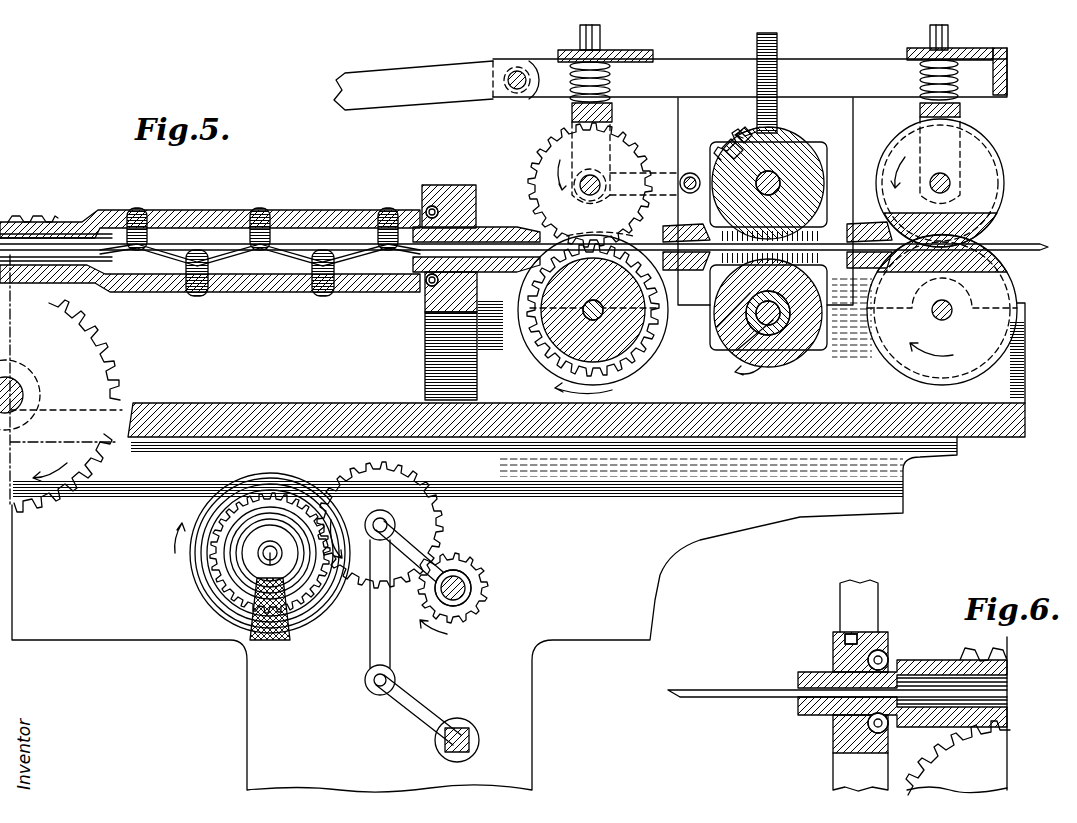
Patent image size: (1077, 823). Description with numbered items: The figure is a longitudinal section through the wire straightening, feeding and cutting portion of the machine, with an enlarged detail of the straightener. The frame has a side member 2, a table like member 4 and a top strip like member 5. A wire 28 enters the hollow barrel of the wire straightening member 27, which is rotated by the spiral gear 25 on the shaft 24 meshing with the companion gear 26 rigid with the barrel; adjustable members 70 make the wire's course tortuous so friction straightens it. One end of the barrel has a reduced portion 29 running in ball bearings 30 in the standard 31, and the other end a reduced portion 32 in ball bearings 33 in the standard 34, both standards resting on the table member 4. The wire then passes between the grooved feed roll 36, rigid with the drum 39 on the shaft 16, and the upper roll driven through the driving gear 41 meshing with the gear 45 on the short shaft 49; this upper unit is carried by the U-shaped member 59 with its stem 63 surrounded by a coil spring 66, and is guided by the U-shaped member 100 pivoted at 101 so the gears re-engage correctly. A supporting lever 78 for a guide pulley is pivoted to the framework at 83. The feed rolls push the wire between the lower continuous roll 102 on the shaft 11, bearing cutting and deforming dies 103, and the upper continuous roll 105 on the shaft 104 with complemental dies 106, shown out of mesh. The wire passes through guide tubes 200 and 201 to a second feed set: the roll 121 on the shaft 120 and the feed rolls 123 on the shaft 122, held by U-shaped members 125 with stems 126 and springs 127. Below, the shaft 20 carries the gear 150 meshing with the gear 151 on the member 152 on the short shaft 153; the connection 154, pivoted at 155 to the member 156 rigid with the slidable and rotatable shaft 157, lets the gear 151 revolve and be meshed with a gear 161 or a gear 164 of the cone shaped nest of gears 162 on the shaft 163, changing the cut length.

In FIG. 5, the side member 2 is at (665, 584).
In FIG. 5, the table like member 4 is at (292, 403).
In FIG. 5, the top strip like member 5 is at (572, 52).
In FIG. 5, the shaft 11 is at (772, 320).
In FIG. 5, the shaft 16 is at (585, 312).
In FIG. 5, the shaft 20 is at (471, 590).
In FIG. 5, the shaft 24 is at (18, 387).
In FIG. 5, the spiral gear 25 is at (87, 368).
In FIG. 6, the spiral gear 25 is at (988, 763).
In FIG. 5, the companion gear 26 is at (33, 221).
In FIG. 6, the companion gear 26 is at (977, 659).
In FIG. 5, the wire straightening member 27 is at (63, 222).
In FIG. 6, the wire straightening member 27 is at (920, 718).
In FIG. 5, the wire 28 is at (80, 232).
In FIG. 6, the wire 28 is at (715, 692).
In FIG. 5, the reduced portion 29 is at (490, 226).
In FIG. 5, the ball bearings 30 is at (442, 192).
In FIG. 5, the standard 31 is at (425, 300).
In FIG. 6, the reduced portion 32 is at (817, 670).
In FIG. 6, the ball bearings 33 is at (888, 657).
In FIG. 6, the standard 34 is at (845, 757).
In FIG. 5, the grooved feed roll 36 is at (522, 330).
In FIG. 5, the drum 39 is at (556, 297).
In FIG. 5, the driving gear 41 is at (563, 246).
In FIG. 5, the gear 45 is at (626, 142).
In FIG. 5, the short shaft 49 is at (590, 173).
In FIG. 5, the U-shaped member 59 is at (572, 113).
In FIG. 5, the stem 63 is at (595, 37).
In FIG. 5, the coil spring 66 is at (612, 82).
In FIG. 5, the adjustable members 70 is at (362, 205).
In FIG. 5, the supporting lever 78 is at (420, 72).
In FIG. 5, the pivot 83 is at (517, 68).
In FIG. 5, the U-shaped member 100 is at (665, 173).
In FIG. 5, the pivot 101 is at (690, 173).
In FIG. 5, the continuous roll 102 is at (735, 297).
In FIG. 5, the cutting and deforming dies 103 is at (723, 350).
In FIG. 5, the shaft 104 is at (770, 178).
In FIG. 5, the continuous roll 105 is at (821, 147).
In FIG. 5, the complemental cutting and deforming dies 106 is at (717, 147).
In FIG. 5, the shaft 120 is at (953, 304).
In FIG. 5, the roll 121 is at (980, 330).
In FIG. 5, the shaft 122 is at (951, 183).
In FIG. 5, the feed rolls 123 is at (968, 148).
In FIG. 5, the U-shaped members 125 is at (960, 110).
In FIG. 5, the stem 126 is at (948, 36).
In FIG. 5, the spring 127 is at (923, 79).
In FIG. 5, the gear 150 is at (467, 565).
In FIG. 5, the gear 151 is at (426, 503).
In FIG. 5, the member 152 is at (407, 552).
In FIG. 5, the short shaft 153 is at (378, 522).
In FIG. 5, the connection 154 is at (377, 635).
In FIG. 5, the pivot 155 is at (372, 686).
In FIG. 5, the member 156 is at (415, 705).
In FIG. 5, the slidable and rotatable shaft 157 is at (470, 729).
In FIG. 5, the gear 161 is at (220, 553).
In FIG. 5, the cone shaped nest of gears 162 is at (203, 517).
In FIG. 5, the shaft 163 is at (263, 560).
In FIG. 5, the gear 164 is at (252, 605).
In FIG. 5, the guide tube 200 is at (698, 219).
In FIG. 5, the guide tube 201 is at (884, 233).